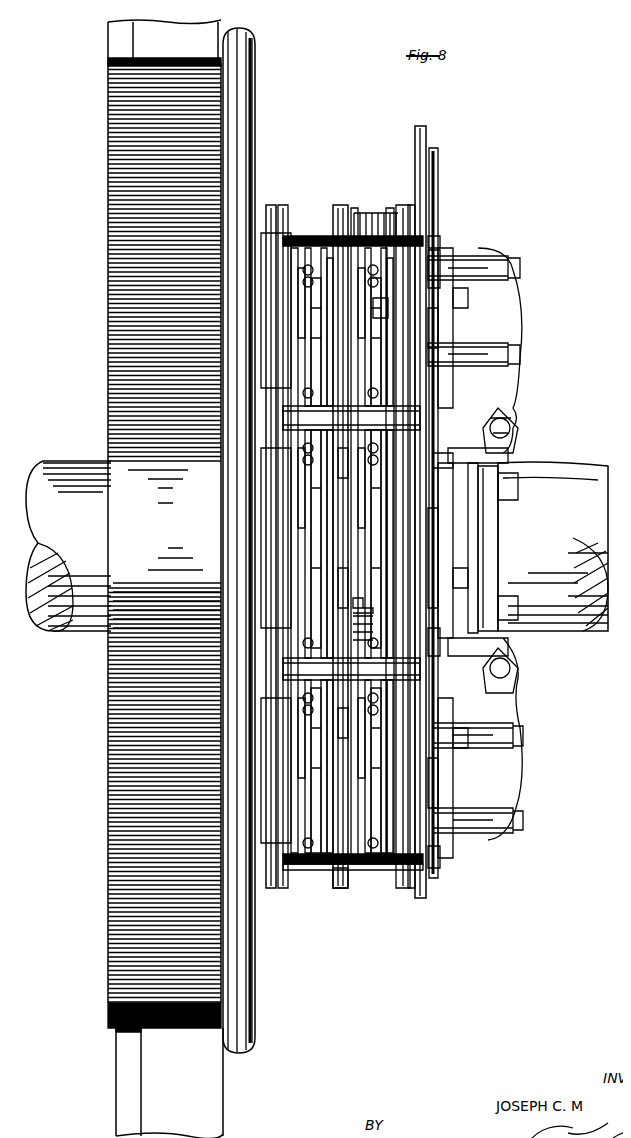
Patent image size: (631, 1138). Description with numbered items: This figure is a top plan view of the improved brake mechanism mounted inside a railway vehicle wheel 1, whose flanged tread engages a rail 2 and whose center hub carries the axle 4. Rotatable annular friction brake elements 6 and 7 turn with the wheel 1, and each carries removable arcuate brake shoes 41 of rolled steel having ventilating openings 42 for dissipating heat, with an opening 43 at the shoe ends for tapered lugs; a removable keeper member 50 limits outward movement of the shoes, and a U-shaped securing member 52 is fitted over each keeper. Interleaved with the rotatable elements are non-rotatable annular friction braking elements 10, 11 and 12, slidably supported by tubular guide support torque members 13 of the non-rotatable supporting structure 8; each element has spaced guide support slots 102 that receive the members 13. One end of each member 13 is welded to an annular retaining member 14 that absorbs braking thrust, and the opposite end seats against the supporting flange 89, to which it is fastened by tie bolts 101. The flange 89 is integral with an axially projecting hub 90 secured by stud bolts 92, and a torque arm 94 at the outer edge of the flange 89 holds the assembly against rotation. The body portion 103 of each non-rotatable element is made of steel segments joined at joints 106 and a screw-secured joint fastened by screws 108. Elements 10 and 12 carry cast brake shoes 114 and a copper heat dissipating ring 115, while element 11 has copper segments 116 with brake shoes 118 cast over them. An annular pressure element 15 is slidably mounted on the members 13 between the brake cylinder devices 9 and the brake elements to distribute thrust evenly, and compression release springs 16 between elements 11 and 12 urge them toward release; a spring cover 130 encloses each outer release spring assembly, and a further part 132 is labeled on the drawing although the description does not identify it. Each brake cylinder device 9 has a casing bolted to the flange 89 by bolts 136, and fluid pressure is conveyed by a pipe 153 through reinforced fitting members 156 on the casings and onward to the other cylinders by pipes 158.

The railway vehicle wheel 1 is at (122, 705).
The rail 2 is at (140, 1060).
The axle 4 is at (80, 622).
The rotatable annular friction brake element 6 is at (285, 300).
The rotatable annular friction brake element 7 is at (375, 300).
The non-rotatable supporting structure 8 is at (428, 878).
The fluid pressure brake cylinder device 9 is at (535, 318).
The non-rotatable annular friction braking element 10 is at (277, 195).
The non-rotatable annular friction braking element 11 is at (333, 195).
The non-rotatable annular friction braking element 12 is at (392, 195).
The non-rotatable tubular guide support torque member 13 is at (425, 232).
The annular non-rotatable retaining member 14 is at (264, 195).
The annular non-rotatable pressure element 15 is at (402, 195).
The compression release spring 16 is at (385, 240).
The removable arcuate brake shoe 41 is at (405, 285).
The ventilating opening 42 is at (358, 240).
The opening 43 is at (310, 300).
The removable keeper member 50 is at (300, 740).
The U-shaped securing member 52 is at (258, 325).
The annular supporting flange 89 is at (440, 315).
The hub 90 is at (480, 520).
The stud bolt 92 is at (510, 478).
The torque arm 94 is at (418, 128).
The tie bolt 101 is at (470, 250).
The guide support slot 102 is at (410, 225).
The body portion 103 is at (432, 452).
The joint 106 is at (380, 300).
The screw 108 is at (300, 834).
The brake shoe 114 is at (405, 330).
The annular heat dissipating ring 115 is at (388, 870).
The arcuate heat dissipating segment 116 is at (335, 862).
The brake shoe 118 is at (300, 719).
The spring cover 130 is at (490, 495).
The spring 132 is at (300, 699).
The bolt 136 is at (505, 260).
The pipe 153 is at (428, 192).
The reinforced fitting member 156 is at (508, 412).
The pipe 158 is at (505, 438).